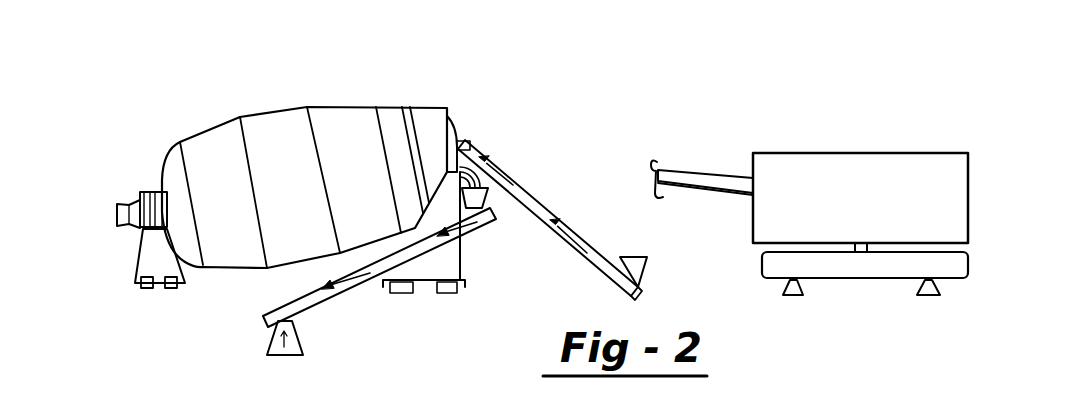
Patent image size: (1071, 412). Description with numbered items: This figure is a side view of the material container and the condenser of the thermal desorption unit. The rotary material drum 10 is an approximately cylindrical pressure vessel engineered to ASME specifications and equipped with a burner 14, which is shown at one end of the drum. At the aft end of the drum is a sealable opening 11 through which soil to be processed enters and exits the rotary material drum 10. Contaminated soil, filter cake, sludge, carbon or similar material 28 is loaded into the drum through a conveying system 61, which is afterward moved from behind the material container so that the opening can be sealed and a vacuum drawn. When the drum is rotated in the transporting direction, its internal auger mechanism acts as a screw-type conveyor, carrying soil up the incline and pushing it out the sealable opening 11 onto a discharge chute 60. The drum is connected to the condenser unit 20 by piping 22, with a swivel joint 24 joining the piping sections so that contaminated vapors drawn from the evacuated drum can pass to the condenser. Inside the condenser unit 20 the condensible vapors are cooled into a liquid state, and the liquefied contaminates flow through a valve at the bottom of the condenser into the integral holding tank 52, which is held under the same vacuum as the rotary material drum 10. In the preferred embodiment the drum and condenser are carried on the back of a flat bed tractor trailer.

The rotary material drum 10 is at (300, 130).
The sealable opening 11 is at (457, 132).
The burner 14 is at (125, 193).
The condenser unit 20 is at (837, 170).
The piping 22 is at (708, 193).
The swivel joint 24 is at (658, 163).
The contaminated soil 28 is at (627, 248).
The integral holding tank 52 is at (767, 265).
The discharge chute 60 is at (322, 305).
The conveying system 61 is at (540, 222).